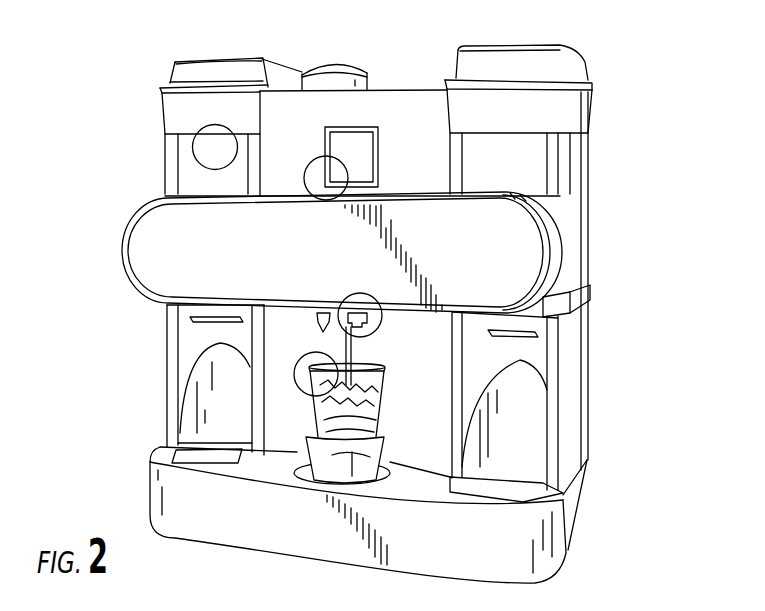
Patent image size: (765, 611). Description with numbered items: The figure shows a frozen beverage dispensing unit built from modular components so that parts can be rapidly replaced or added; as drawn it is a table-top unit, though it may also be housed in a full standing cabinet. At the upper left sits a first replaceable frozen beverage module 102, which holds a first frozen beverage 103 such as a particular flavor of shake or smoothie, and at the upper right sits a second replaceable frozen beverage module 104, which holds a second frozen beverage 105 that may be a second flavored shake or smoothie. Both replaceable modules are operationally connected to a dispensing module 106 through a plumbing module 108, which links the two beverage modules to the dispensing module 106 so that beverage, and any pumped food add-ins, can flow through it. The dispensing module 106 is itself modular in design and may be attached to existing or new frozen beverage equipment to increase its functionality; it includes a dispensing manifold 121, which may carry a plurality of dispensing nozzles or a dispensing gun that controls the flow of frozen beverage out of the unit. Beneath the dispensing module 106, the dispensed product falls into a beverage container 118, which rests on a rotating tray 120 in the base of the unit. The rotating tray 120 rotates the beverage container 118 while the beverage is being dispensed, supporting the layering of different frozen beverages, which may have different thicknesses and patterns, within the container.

The first replaceable frozen beverage module 102 is at (205, 65).
The first frozen beverage 103 is at (197, 155).
The second replaceable frozen beverage module 104 is at (532, 60).
The second frozen beverage 105 is at (553, 243).
The dispensing module 106 is at (382, 319).
The plumbing module 108 is at (306, 168).
The beverage container 118 is at (296, 377).
The rotating tray 120 is at (297, 468).
The dispensing manifold 121 is at (315, 322).